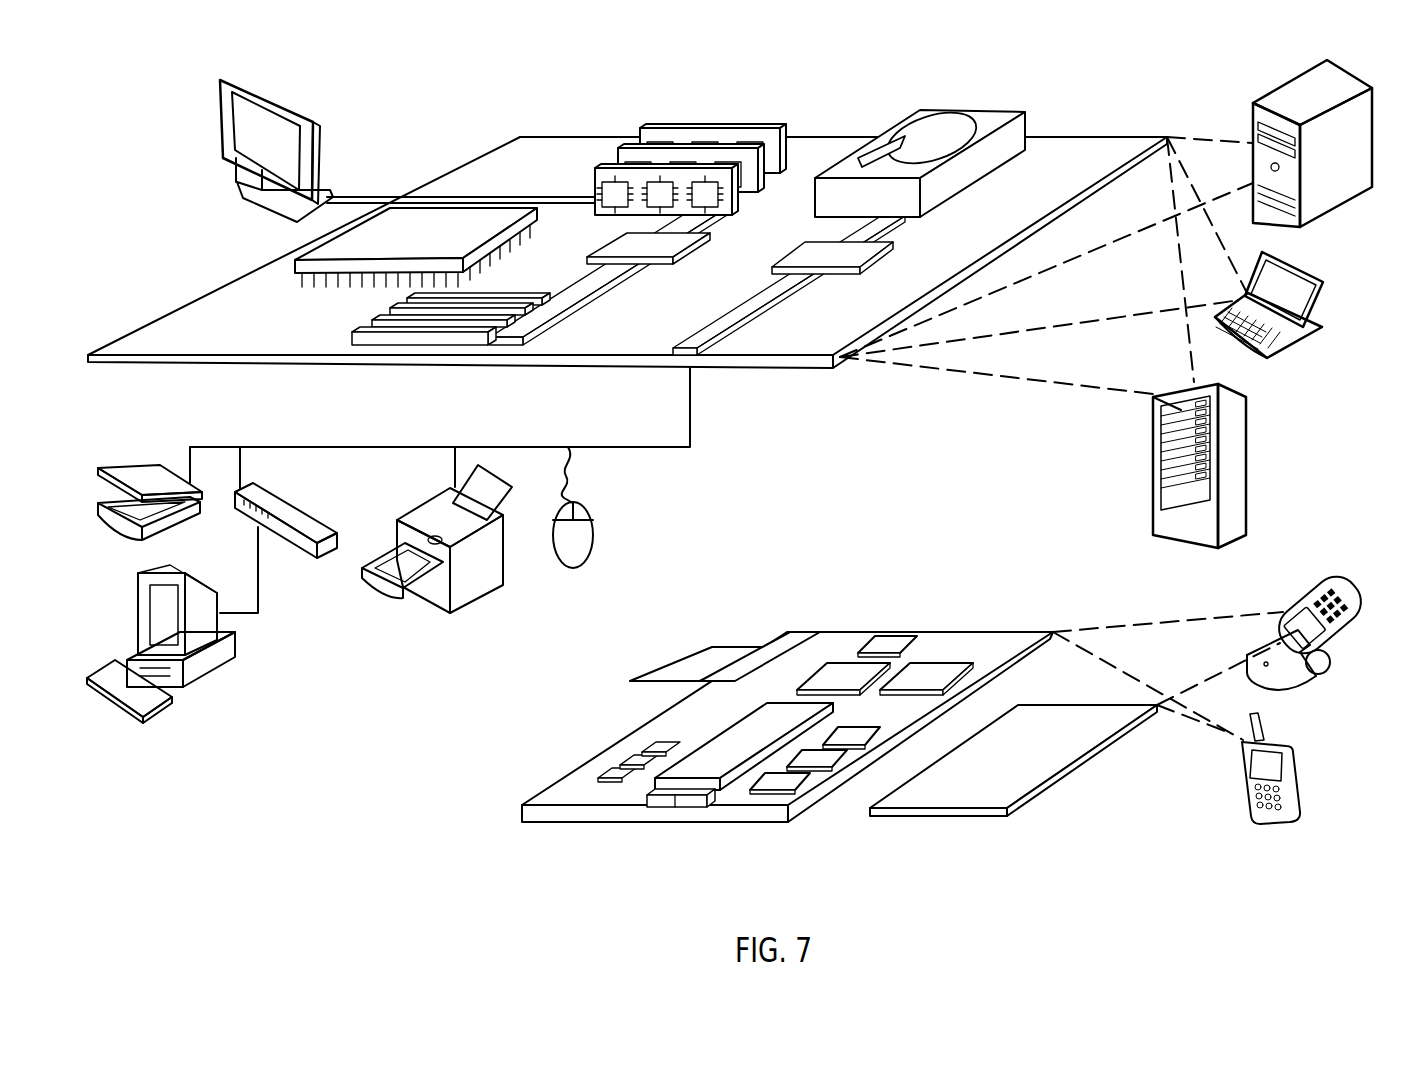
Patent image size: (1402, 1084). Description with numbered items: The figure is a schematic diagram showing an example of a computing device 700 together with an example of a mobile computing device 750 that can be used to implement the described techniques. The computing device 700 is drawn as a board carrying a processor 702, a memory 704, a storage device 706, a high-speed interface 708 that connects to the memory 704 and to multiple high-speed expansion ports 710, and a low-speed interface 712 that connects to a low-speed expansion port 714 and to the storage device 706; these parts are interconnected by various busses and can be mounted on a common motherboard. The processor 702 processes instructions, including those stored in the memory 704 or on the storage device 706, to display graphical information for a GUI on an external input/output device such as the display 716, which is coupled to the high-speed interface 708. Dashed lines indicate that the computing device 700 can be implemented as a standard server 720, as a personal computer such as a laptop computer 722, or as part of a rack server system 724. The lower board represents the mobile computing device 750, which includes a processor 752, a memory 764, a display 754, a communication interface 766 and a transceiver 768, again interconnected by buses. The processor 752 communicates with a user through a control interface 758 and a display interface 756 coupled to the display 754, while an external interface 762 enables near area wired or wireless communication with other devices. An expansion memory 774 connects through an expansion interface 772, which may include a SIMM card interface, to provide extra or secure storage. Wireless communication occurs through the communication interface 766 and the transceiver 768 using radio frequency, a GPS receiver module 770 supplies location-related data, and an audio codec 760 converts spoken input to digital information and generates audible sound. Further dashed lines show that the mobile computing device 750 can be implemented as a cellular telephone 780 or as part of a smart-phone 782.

The computing device 700 is at (431, 102).
The processor 702 is at (303, 265).
The memory 704 is at (653, 128).
The storage device 706 is at (917, 113).
The high-speed interface 708 is at (623, 243).
The high-speed expansion ports 710 is at (372, 323).
The low-speed interface 712 is at (813, 250).
The low-speed expansion port 714 is at (700, 356).
The display 716 is at (223, 75).
The standard server 720 is at (1253, 120).
The laptop computer 722 is at (1322, 282).
The rack server system 724 is at (1153, 491).
The mobile computing device 750 is at (490, 821).
The processor 752 is at (713, 770).
The display 754 is at (970, 790).
The display interface 756 is at (800, 775).
The control interface 758 is at (830, 765).
The audio codec 760 is at (853, 735).
The external interface 762 is at (677, 808).
The memory 764 is at (617, 762).
The communication interface 766 is at (843, 670).
The transceiver 768 is at (927, 673).
The GPS receiver module 770 is at (898, 632).
The expansion interface 772 is at (753, 645).
The expansion memory 774 is at (680, 650).
The cellular telephone 780 is at (1300, 585).
The smart-phone 782 is at (1243, 777).